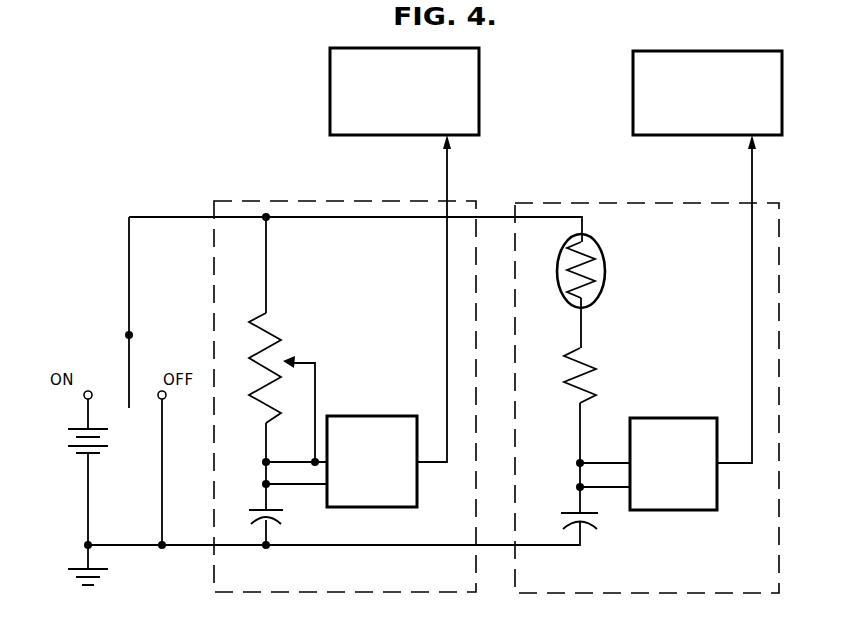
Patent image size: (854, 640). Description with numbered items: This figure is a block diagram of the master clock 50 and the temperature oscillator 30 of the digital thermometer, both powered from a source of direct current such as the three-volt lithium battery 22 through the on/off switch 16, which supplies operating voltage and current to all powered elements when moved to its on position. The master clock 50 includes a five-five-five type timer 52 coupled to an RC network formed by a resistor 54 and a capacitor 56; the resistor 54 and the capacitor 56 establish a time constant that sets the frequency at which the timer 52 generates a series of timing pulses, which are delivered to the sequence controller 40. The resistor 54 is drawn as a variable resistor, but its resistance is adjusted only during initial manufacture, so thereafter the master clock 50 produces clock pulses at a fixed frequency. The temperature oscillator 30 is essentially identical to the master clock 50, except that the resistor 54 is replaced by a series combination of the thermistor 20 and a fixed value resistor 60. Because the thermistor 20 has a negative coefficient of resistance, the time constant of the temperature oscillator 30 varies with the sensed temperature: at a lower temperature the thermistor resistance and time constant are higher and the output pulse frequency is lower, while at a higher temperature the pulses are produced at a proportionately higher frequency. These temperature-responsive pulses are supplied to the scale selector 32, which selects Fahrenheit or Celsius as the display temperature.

The on/off switch 16 is at (116, 389).
The thermistor 20 is at (606, 270).
The battery 22 is at (72, 452).
The temperature oscillator 30 is at (590, 202).
The scale selector 32 is at (685, 51).
The sequence controller 40 is at (480, 98).
The master clock 50 is at (297, 200).
The 555 type timer 52 is at (366, 416).
The resistor 54 is at (272, 323).
The capacitor 56 is at (284, 512).
The fixed value resistor 60 is at (594, 360).